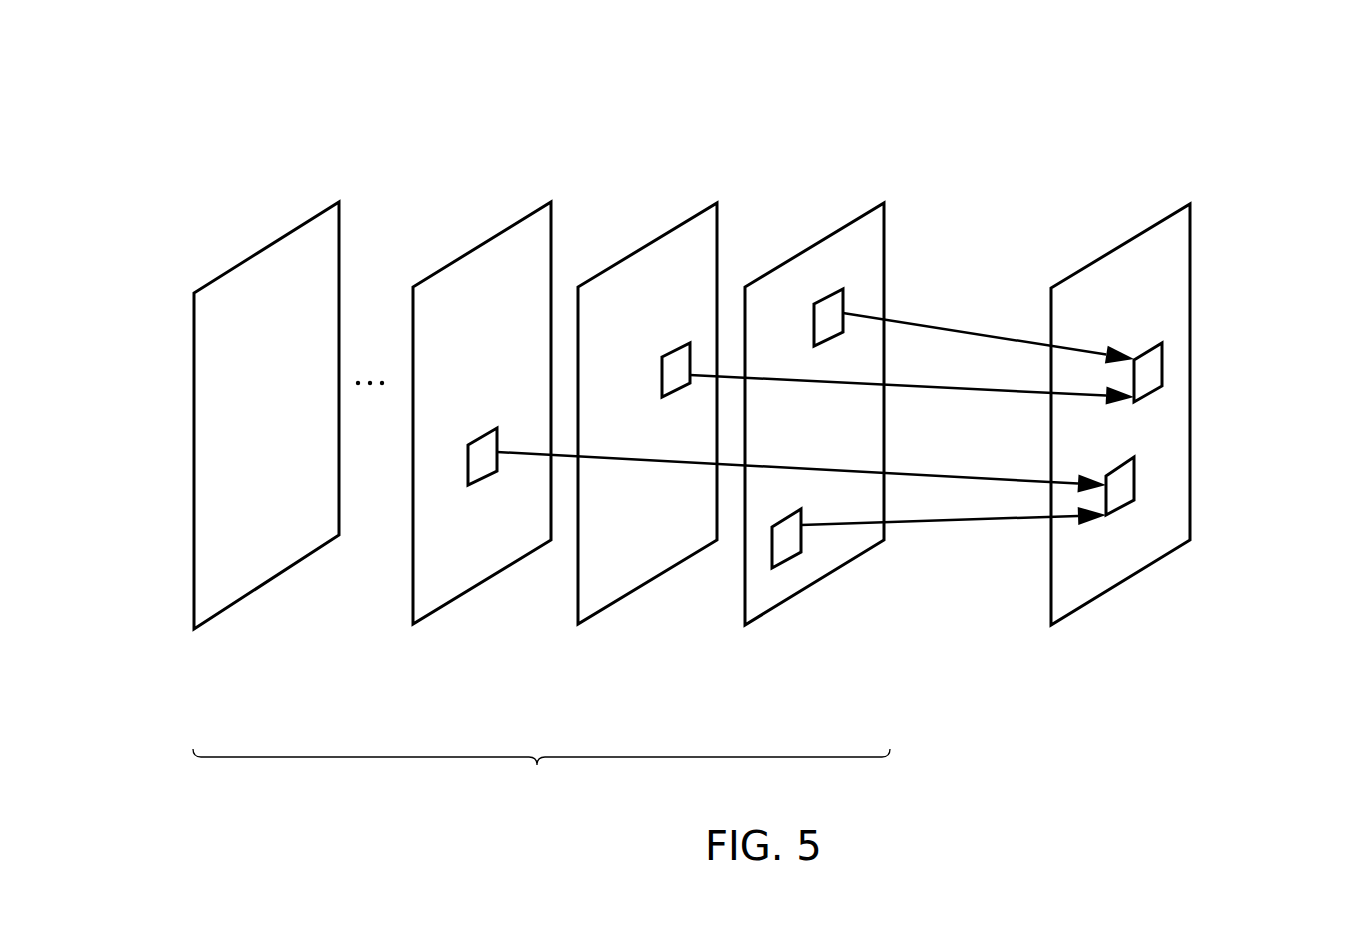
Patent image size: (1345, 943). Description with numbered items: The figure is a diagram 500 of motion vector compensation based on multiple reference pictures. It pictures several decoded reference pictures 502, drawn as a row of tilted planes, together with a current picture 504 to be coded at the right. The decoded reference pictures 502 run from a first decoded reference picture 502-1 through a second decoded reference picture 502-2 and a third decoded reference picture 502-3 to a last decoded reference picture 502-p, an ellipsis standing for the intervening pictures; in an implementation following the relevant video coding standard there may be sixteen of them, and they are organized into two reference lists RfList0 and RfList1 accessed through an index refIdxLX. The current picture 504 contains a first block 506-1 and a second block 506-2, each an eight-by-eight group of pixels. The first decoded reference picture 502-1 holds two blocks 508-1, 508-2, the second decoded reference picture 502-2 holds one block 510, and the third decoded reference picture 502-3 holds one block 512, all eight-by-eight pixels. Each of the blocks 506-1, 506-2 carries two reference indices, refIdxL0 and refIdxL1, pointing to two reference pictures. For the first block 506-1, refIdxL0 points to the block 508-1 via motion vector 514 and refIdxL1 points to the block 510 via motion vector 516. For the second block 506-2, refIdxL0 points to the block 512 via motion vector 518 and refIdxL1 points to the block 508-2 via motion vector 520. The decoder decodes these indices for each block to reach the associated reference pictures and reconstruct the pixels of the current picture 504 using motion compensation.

The diagram 500 is at (878, 79).
The decoded reference pictures 502 is at (541, 782).
The decoded reference picture p 502-p is at (300, 226).
The third decoded reference picture 502-3 is at (458, 255).
The second decoded reference picture 502-2 is at (683, 222).
The first decoded reference picture 502-1 is at (872, 208).
The current picture 504 is at (1172, 212).
The first block 506-1 is at (1164, 363).
The second block 506-2 is at (1137, 478).
The block 508-1 is at (847, 296).
The block 508-2 is at (772, 550).
The block 510 is at (692, 352).
The block 512 is at (468, 463).
The motion vector 514 is at (907, 322).
The motion vector 516 is at (997, 392).
The motion vector 518 is at (650, 460).
The motion vector 520 is at (983, 520).